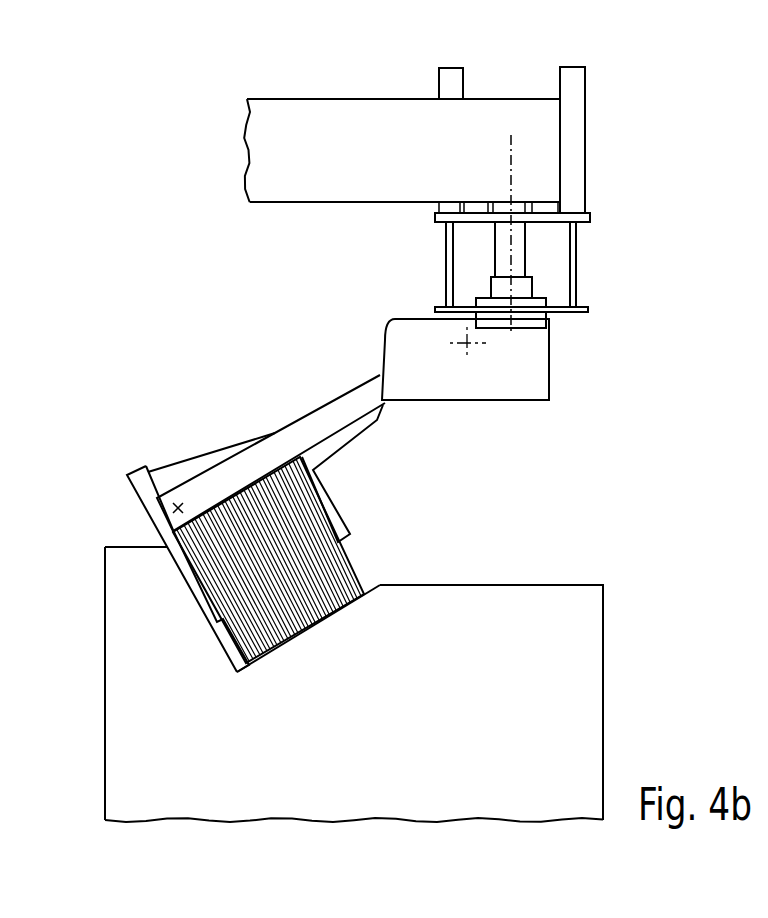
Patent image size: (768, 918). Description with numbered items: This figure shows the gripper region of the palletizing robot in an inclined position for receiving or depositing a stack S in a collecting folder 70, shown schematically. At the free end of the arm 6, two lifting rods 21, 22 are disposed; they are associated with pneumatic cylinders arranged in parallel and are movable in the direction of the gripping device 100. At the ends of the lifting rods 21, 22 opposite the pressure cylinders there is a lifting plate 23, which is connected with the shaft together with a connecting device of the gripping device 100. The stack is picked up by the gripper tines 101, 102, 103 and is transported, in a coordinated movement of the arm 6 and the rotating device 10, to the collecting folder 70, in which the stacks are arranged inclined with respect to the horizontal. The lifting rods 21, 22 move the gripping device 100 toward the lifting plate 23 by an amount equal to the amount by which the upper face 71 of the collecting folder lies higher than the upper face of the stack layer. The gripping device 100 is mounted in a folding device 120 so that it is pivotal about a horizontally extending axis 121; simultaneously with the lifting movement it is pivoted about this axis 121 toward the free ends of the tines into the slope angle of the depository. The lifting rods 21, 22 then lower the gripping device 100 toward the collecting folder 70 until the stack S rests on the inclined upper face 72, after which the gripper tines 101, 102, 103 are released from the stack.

The arm 6 is at (352, 112).
The lifting rod 22 is at (446, 240).
The lifting rod 21 is at (577, 244).
The rotating device 10 is at (520, 304).
The lifting plate 23 is at (586, 313).
The folding device 120 is at (537, 383).
The horizontally extending axis 121 is at (467, 345).
The gripping device 100 is at (221, 404).
The gripper tine 103 is at (334, 498).
The stack of sheets S is at (340, 558).
The gripper tine 101 is at (205, 595).
The gripper tine 102 is at (148, 569).
The upper face of the collecting folder 71 is at (120, 546).
The inclined upper face of the collecting folder 72 is at (374, 589).
The collecting folder 70 is at (580, 672).